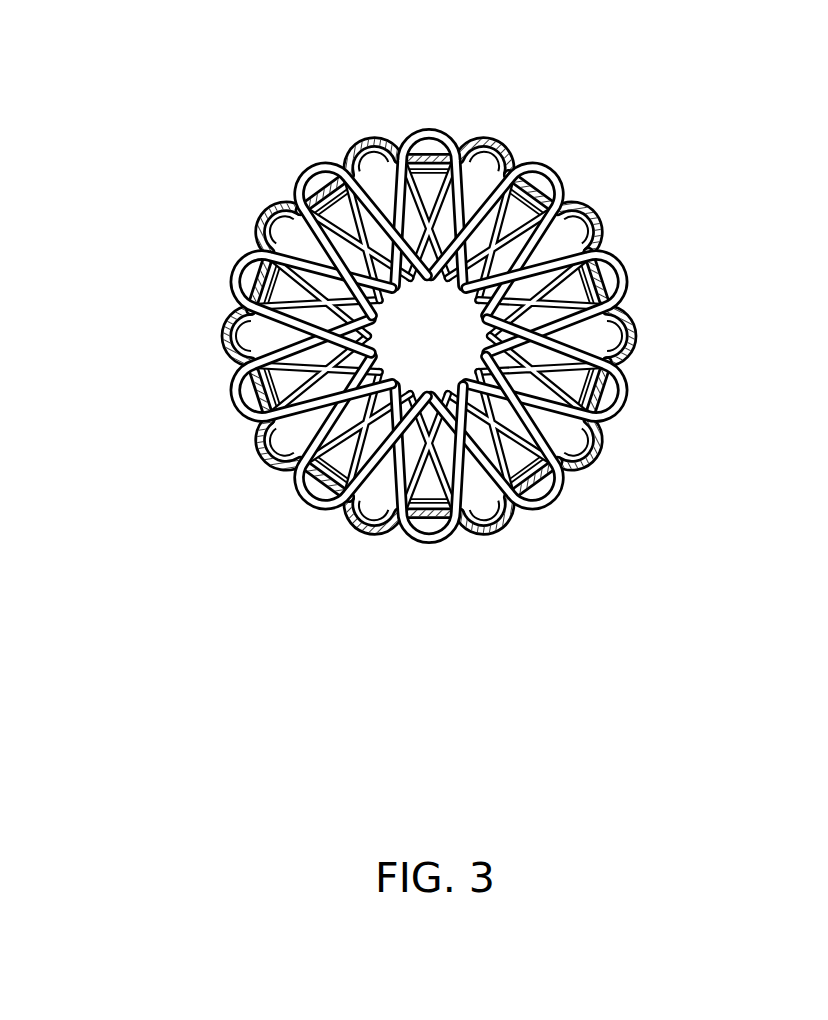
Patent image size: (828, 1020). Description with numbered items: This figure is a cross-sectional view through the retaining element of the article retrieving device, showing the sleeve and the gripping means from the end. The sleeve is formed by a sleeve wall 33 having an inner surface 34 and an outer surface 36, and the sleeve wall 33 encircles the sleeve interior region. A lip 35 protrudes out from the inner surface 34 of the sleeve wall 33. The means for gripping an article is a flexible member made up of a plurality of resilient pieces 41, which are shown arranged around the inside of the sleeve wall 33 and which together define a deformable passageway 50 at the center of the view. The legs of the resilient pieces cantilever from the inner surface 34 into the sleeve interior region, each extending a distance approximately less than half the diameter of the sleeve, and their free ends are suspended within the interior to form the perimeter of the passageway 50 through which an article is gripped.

The resilient pieces 41 is at (596, 212).
The outer surface 36 is at (598, 465).
The lip 35 is at (253, 460).
The inner surface 34 is at (303, 510).
The sleeve wall 33 is at (497, 540).
The passageway 50 is at (441, 350).